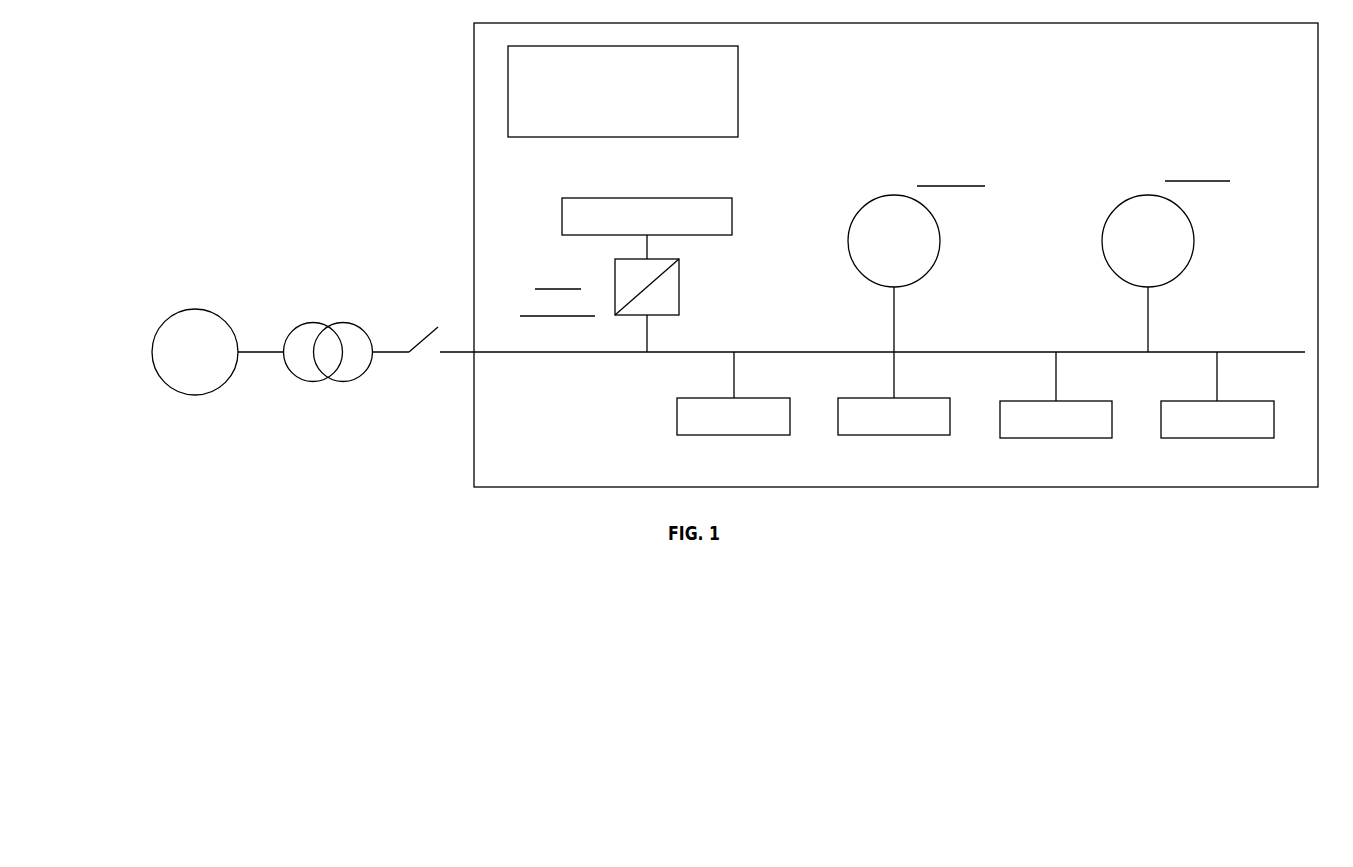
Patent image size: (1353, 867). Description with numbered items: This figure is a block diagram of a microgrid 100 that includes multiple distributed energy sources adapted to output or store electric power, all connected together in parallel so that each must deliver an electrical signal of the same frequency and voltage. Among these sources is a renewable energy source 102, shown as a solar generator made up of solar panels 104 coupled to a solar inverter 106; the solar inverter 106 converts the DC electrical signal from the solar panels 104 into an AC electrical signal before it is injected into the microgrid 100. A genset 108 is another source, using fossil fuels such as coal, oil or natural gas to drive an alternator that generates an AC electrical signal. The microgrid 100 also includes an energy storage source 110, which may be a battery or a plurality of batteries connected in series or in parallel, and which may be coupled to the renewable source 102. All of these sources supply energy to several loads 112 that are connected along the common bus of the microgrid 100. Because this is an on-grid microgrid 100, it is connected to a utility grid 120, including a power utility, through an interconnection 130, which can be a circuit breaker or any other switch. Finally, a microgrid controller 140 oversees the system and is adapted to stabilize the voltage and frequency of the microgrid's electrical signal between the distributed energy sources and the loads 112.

The microgrid 100 is at (454, 76).
The microgrid controller 140 is at (738, 63).
The solar panels 104 is at (561, 217).
The renewable energy source 102 is at (751, 234).
The solar inverter 106 is at (679, 280).
The energy storage source 110 is at (940, 247).
The genset 108 is at (1195, 247).
The loads 112 is at (677, 412).
The utility grid 120 is at (268, 266).
The interconnection 130 is at (463, 417).